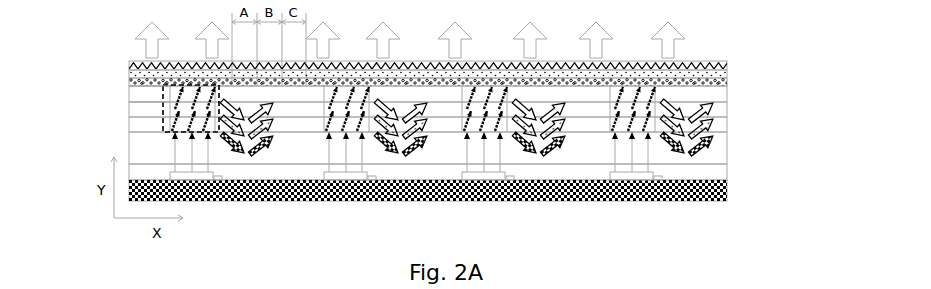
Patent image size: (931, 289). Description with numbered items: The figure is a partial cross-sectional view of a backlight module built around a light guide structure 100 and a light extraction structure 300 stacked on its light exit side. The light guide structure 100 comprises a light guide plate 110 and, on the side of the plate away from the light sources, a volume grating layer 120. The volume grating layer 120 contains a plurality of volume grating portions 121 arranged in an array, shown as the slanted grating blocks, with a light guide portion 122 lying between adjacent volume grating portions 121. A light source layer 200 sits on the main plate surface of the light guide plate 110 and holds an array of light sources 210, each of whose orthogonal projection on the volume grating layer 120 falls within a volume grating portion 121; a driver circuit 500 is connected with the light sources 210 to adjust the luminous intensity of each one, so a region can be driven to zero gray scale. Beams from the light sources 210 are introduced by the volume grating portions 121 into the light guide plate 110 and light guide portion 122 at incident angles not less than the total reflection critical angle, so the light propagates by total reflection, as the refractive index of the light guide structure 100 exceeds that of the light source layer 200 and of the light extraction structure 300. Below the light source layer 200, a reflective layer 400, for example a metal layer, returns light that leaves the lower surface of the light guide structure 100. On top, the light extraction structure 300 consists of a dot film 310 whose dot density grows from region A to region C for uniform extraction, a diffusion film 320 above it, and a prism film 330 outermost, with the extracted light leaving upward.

The light guide structure 100 is at (499, 128).
The light guide plate 110 is at (720, 150).
The volume grating layer 120 is at (374, 119).
The volume grating portions 121 is at (163, 105).
The light guide portion 122 is at (138, 92).
The light source layer 200 is at (720, 172).
The light sources 210 is at (620, 177).
The light extraction structure 300 is at (486, 65).
The dot film 310 is at (727, 83).
The diffusion film 320 is at (727, 72).
The prism film 330 is at (727, 62).
The reflective layer 400 is at (727, 197).
The driver circuit 500 is at (657, 182).